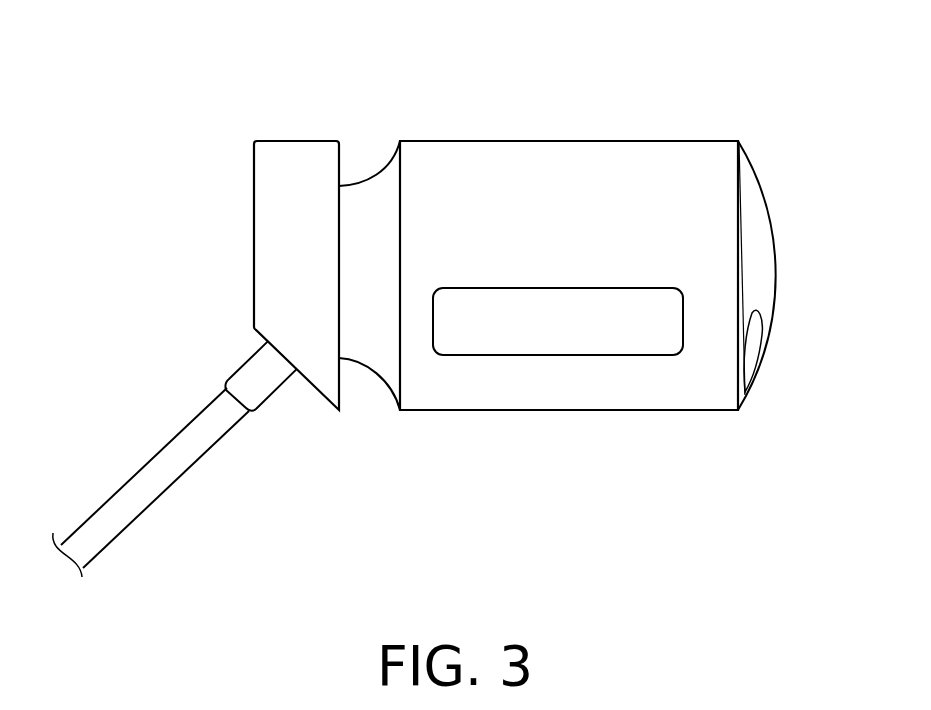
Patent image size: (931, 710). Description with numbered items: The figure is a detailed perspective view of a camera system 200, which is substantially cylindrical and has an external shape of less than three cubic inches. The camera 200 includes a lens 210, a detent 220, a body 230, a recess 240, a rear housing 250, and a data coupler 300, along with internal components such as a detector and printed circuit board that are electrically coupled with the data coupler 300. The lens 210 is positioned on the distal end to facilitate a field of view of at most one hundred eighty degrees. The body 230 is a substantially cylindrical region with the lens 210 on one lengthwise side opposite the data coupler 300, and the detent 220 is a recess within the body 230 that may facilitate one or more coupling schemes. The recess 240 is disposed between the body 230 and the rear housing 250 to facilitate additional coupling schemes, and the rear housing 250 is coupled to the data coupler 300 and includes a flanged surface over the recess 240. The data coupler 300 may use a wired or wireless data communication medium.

The camera system 200 is at (755, 90).
The lens 210 is at (762, 290).
The detent 220 is at (576, 340).
The body 230 is at (482, 148).
The recess 240 is at (378, 185).
The rear housing 250 is at (267, 258).
The data coupler 300 is at (115, 518).